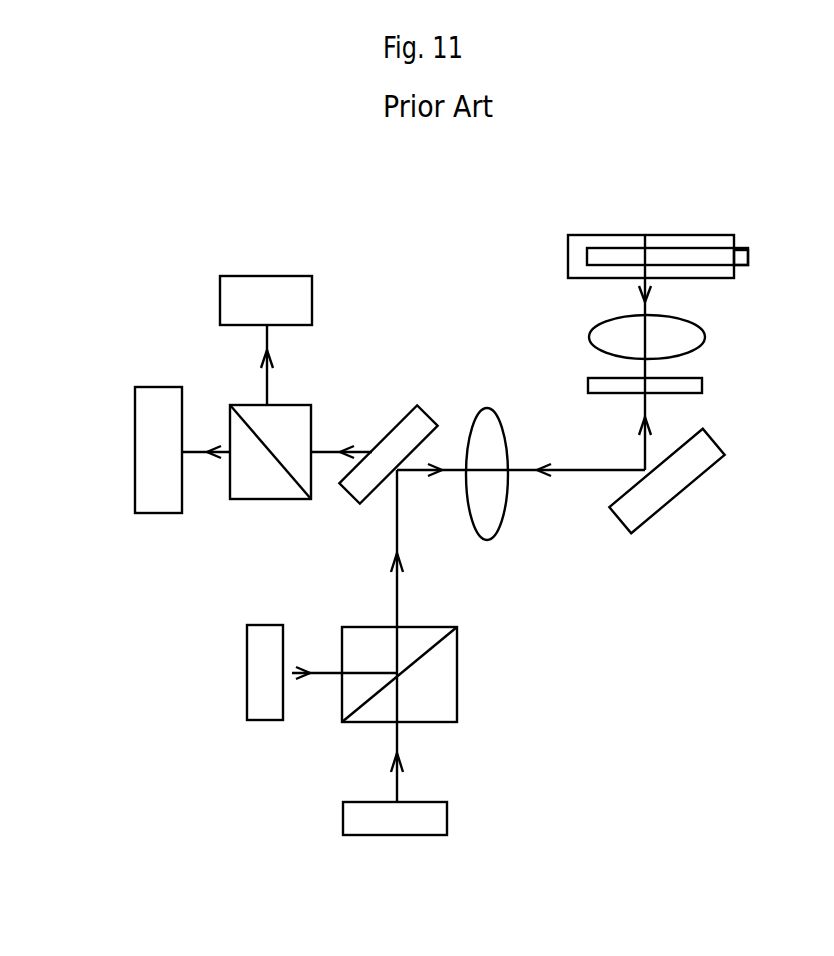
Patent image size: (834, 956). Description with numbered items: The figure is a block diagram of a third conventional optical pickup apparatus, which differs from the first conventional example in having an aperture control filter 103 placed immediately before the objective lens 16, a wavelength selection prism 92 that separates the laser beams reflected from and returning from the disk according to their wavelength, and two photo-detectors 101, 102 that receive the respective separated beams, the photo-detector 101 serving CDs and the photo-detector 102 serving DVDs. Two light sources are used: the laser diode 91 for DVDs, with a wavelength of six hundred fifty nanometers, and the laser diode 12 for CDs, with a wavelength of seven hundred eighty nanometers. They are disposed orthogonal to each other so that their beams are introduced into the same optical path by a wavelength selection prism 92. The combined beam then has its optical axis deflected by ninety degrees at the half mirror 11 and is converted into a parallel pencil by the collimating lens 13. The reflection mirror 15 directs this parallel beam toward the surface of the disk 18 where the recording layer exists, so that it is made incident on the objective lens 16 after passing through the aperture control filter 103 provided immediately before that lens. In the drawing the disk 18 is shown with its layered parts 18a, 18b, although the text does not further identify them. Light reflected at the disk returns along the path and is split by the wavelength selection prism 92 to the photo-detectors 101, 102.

The half mirror 11 is at (413, 408).
The laser diode 12 is at (377, 825).
The collimating lens 13 is at (486, 410).
The reflection mirror 15 is at (670, 492).
The objective lens 16 is at (612, 332).
The disk 18 is at (618, 233).
The recording layer 18a is at (747, 252).
The substrate 18b is at (675, 242).
The laser diode 91 is at (248, 658).
The wavelength selection prism 92 is at (314, 415).
The photo-detector 101 is at (152, 388).
The photo-detector 102 is at (290, 277).
The aperture control filter 103 is at (590, 385).